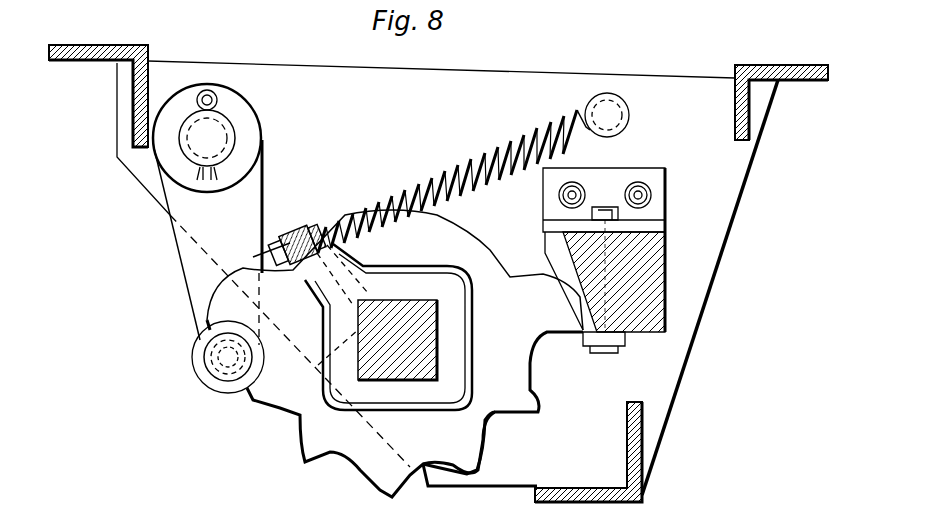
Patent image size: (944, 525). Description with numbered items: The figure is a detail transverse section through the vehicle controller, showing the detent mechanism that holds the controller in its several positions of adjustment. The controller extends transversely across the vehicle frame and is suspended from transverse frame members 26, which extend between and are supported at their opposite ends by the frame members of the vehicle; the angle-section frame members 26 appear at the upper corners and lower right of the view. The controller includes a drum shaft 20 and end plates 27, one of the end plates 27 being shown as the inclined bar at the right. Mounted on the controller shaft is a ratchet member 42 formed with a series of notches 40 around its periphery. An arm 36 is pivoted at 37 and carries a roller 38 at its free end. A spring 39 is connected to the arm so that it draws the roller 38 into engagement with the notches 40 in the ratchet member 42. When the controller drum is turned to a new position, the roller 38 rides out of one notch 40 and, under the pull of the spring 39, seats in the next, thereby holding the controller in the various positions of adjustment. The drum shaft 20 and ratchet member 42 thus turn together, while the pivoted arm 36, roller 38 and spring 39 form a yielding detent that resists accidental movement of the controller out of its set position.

The transverse frame member 26 is at (76, 44).
The end plate 27 is at (703, 298).
The arm 36 is at (182, 240).
The pivot 37 is at (230, 130).
The roller 38 is at (196, 367).
The spring 39 is at (442, 162).
The notches 40 is at (270, 353).
The ratchet member 42 is at (340, 440).
The drum shaft 20 is at (425, 320).